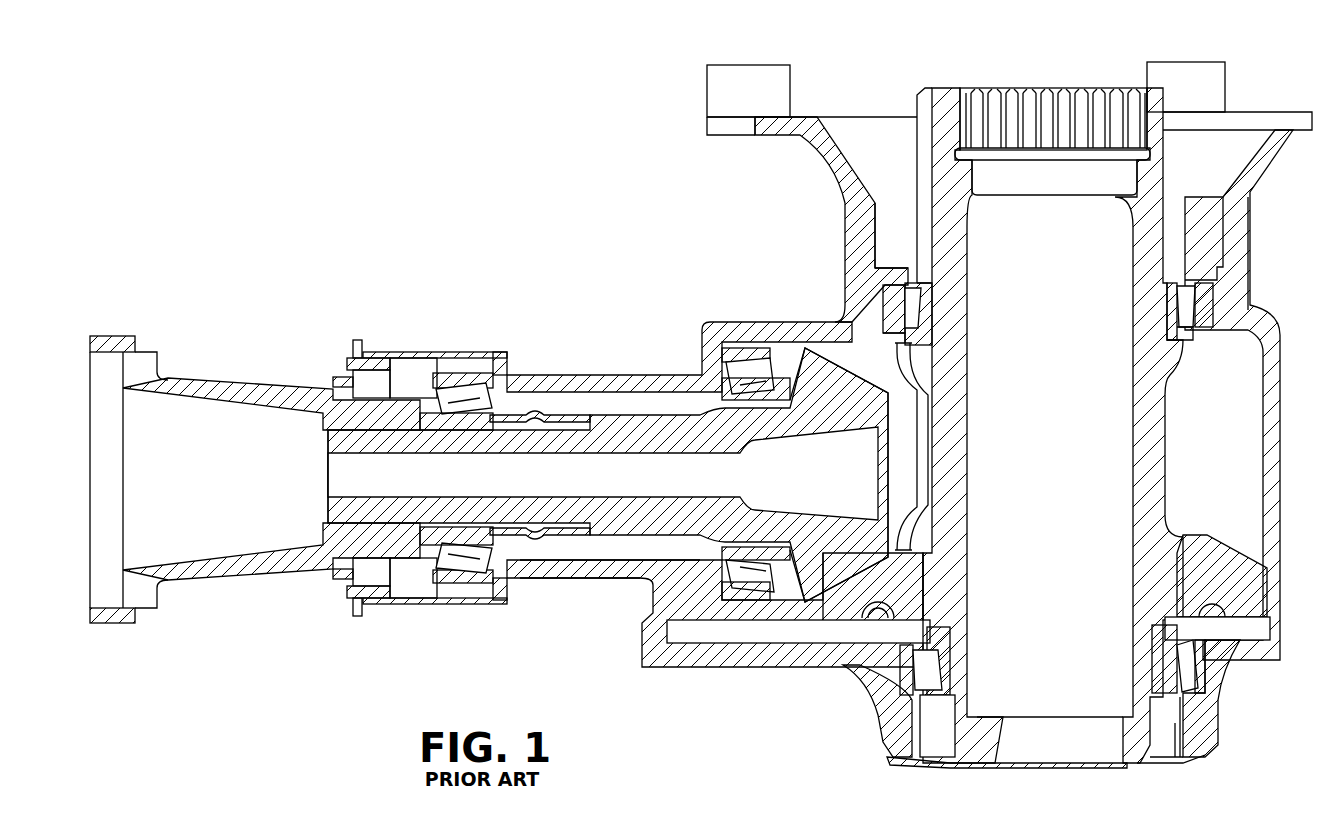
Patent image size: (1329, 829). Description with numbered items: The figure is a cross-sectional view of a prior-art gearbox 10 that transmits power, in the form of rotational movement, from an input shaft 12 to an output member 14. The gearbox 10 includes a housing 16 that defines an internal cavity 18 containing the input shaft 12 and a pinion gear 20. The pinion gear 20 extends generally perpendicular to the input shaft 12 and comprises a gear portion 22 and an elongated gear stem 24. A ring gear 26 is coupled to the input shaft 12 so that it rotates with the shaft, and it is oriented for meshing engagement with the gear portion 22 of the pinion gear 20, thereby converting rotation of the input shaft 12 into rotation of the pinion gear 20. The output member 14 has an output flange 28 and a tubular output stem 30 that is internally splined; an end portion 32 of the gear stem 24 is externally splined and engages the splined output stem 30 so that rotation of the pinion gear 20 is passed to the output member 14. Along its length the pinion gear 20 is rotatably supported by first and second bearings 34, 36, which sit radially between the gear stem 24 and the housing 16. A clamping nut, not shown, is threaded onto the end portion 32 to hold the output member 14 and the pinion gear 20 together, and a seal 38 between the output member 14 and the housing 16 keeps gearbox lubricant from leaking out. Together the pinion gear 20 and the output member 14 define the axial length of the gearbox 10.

The gearbox 10 is at (569, 175).
The input shaft 12 is at (945, 86).
The output member 14 is at (224, 374).
The housing 16 is at (607, 377).
The internal cavity 18 is at (605, 555).
The pinion gear 20 is at (650, 545).
The gear portion 22 is at (828, 365).
The gear stem 24 is at (543, 432).
The ring gear 26 is at (870, 615).
The output flange 28 is at (130, 623).
The output stem 30 is at (405, 548).
The end portion 32 is at (330, 440).
The first bearing 34 is at (750, 370).
The second bearing 36 is at (443, 395).
The seal 38 is at (352, 357).